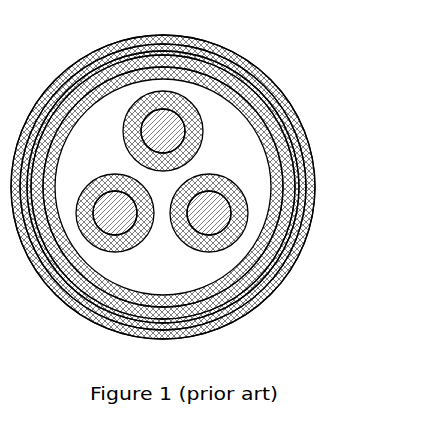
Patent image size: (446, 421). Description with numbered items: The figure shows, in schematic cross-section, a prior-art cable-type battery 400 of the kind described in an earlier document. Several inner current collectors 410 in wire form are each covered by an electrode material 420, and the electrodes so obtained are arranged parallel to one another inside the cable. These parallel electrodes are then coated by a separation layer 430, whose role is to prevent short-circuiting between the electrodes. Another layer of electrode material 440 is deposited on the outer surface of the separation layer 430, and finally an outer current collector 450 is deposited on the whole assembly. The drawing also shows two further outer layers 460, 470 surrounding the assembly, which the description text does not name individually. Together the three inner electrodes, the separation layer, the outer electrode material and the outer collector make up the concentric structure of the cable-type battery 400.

The power cable 400 is at (302, 37).
The inner current collector 410 is at (153, 125).
The electrode material 420 is at (163, 100).
The separation layer 430 is at (302, 124).
The electrode material 440 is at (309, 142).
The outer current collector 450 is at (312, 160).
The bedding layer 460 is at (311, 180).
The outer jacket 470 is at (308, 215).